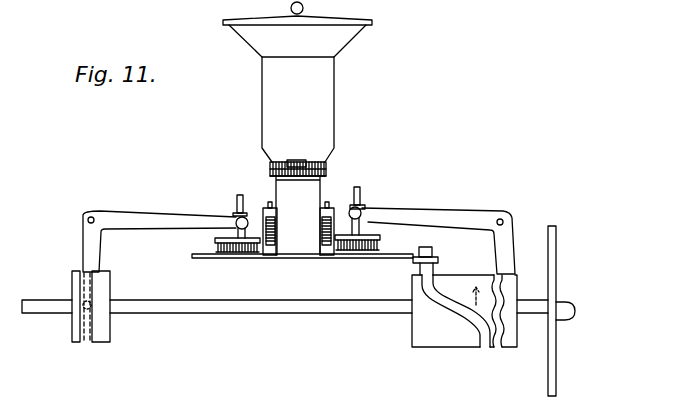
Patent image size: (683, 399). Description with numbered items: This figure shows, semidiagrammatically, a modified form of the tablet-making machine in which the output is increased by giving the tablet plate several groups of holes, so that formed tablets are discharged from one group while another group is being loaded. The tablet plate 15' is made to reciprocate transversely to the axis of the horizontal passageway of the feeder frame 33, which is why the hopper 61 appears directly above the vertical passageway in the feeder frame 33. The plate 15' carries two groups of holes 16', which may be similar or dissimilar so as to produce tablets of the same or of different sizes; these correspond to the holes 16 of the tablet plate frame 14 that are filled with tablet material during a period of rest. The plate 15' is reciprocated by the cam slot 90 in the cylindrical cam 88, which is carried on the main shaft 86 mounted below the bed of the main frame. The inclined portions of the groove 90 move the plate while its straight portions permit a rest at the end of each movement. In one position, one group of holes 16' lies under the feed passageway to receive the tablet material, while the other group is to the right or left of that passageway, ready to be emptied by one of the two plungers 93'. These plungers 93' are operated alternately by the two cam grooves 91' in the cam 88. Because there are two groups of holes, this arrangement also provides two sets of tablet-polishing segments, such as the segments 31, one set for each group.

The hopper 61 is at (262, 88).
The feeder frame 33 is at (322, 183).
The plungers 93' is at (317, 207).
The groups of holes 16' is at (298, 238).
The tablet-polishing segments 31 is at (268, 257).
The holes 16 is at (159, 256).
The tablet plate frame 14 is at (438, 258).
The tablet plate 15' is at (280, 266).
The cam grooves 91' is at (91, 333).
The main shaft 86 is at (285, 318).
The cylindrical cam 88 is at (438, 347).
The cam groove 90 is at (488, 347).